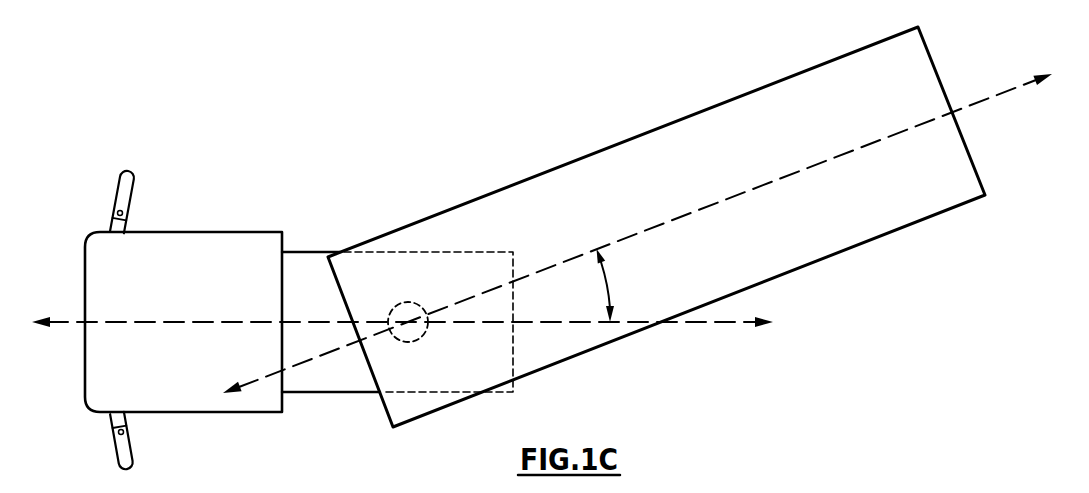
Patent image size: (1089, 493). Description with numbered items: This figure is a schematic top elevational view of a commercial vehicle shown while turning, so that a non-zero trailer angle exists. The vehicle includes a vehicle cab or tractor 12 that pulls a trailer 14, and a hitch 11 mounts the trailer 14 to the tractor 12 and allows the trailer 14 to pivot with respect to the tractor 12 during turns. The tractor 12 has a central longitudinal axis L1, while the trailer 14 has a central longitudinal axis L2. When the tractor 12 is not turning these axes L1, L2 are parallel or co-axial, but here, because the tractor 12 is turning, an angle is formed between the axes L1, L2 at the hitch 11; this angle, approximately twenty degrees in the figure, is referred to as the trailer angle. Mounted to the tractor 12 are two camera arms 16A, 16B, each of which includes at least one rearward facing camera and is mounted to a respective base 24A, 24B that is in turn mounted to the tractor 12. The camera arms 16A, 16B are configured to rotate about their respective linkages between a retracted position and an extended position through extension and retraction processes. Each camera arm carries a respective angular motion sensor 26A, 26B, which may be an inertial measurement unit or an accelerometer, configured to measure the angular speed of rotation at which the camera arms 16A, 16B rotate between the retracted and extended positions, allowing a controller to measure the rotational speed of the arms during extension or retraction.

The hitch 11 is at (400, 303).
The tractor 12 is at (100, 268).
The trailer 14 is at (858, 70).
The camera arm 16A is at (126, 447).
The camera arm 16B is at (126, 196).
The base 24A is at (110, 416).
The base 24B is at (110, 229).
The angular motion sensor 26A is at (124, 432).
The angular motion sensor 26B is at (123, 213).
The central longitudinal axis of the tractor L1 is at (713, 325).
The central longitudinal axis of the trailer L2 is at (1012, 85).